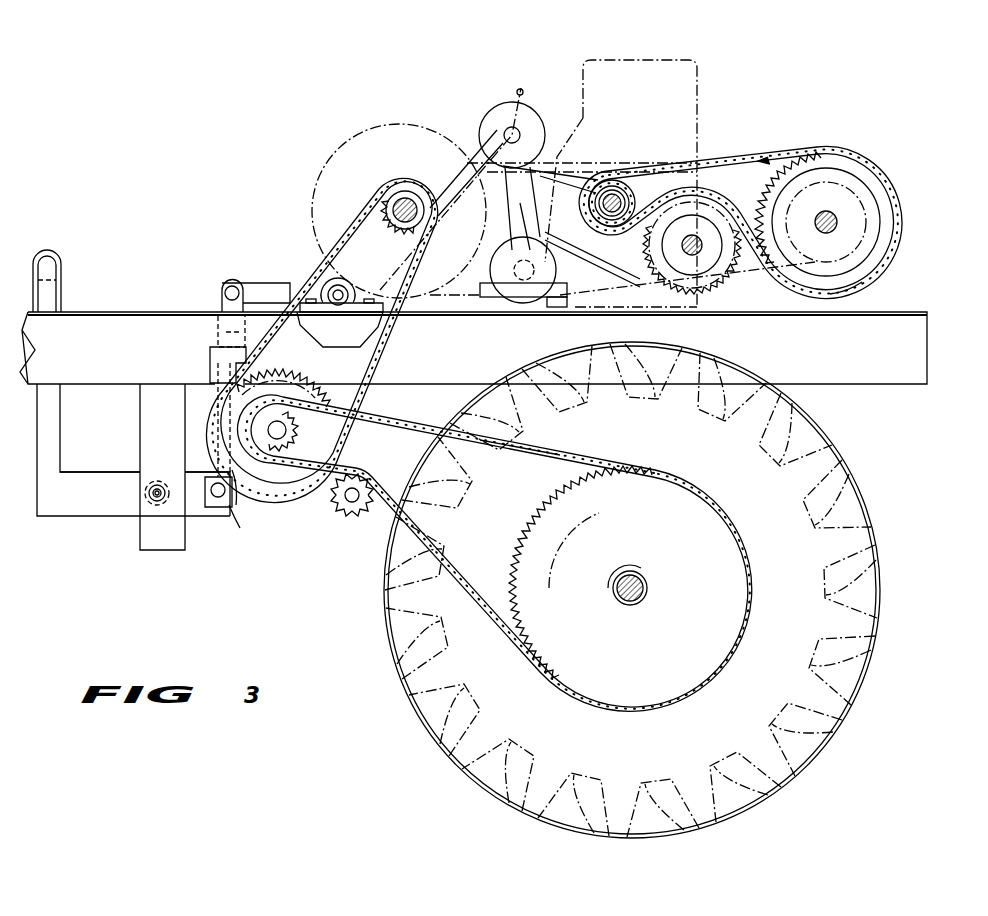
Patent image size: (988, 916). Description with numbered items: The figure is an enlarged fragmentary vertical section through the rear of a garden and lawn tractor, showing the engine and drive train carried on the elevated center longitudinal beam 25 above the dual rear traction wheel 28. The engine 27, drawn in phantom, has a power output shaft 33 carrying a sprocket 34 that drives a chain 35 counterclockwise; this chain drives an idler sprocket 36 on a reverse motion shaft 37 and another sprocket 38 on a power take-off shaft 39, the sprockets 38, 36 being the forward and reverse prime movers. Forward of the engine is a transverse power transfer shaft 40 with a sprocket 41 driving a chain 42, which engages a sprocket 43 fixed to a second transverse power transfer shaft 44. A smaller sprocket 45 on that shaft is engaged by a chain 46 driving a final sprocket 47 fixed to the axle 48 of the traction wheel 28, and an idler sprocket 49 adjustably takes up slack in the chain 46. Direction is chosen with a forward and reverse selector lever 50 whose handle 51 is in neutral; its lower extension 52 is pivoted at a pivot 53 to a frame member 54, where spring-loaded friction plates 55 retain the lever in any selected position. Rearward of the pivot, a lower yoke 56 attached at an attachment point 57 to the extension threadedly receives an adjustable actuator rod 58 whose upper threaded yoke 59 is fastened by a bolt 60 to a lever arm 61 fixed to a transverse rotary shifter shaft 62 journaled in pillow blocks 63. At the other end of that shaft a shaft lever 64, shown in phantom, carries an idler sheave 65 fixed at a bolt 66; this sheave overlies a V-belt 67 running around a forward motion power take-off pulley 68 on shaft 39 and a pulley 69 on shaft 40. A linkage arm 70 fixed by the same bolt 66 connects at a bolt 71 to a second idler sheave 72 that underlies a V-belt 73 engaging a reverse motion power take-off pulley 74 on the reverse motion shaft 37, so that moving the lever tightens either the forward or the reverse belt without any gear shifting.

The center longitudinal beam 25 is at (148, 322).
The engine 27 is at (652, 62).
The dual rear traction wheel 28 is at (866, 474).
The power output shaft 33 is at (612, 180).
The sprocket 34 is at (625, 192).
The chain 35 is at (760, 152).
The idler sprocket 36 is at (705, 294).
The reverse motion shaft 37 is at (702, 252).
The sprocket 38 is at (862, 268).
The power take-off shaft 39 is at (830, 230).
The transverse power transfer shaft 40 is at (410, 192).
The sprocket 41 is at (386, 210).
The chain 42 is at (322, 258).
The sprocket 43 is at (312, 372).
The transverse power transfer shaft 44 is at (282, 448).
The smaller sprocket 45 is at (330, 441).
The chain 46 is at (560, 452).
The final sprocket 47 is at (730, 520).
The axle 48 is at (642, 596).
The idler sprocket 49 is at (350, 518).
The forward and reverse selector lever 50 is at (52, 430).
The handle 51 is at (62, 264).
The lower extension 52 is at (100, 480).
The pivot 53 is at (150, 499).
The frame member 54 is at (152, 412).
The spring-loaded friction plates 55 is at (158, 505).
The lower yoke 56 is at (213, 509).
The attachment point 57 is at (240, 528).
The adjustable actuator rod 58 is at (214, 368).
The upper threaded yoke 59 is at (222, 336).
The bolt 60 is at (232, 286).
The lever arm 61 is at (270, 284).
The transverse rotary shifter shaft 62 is at (330, 280).
The pillow blocks 63 is at (348, 284).
The shaft lever 64 is at (460, 178).
The idler sheave 65 is at (521, 90).
The bolt 66 is at (480, 122).
The V-belt 67 is at (628, 158).
The forward motion power take-off pulley 68 is at (850, 300).
The pulley 69 is at (322, 176).
The linkage arm 70 is at (492, 220).
The bolt 71 is at (500, 302).
The idler sheave 72 is at (508, 300).
The V-belt 73 is at (584, 238).
The reverse motion power take-off pulley 74 is at (648, 262).